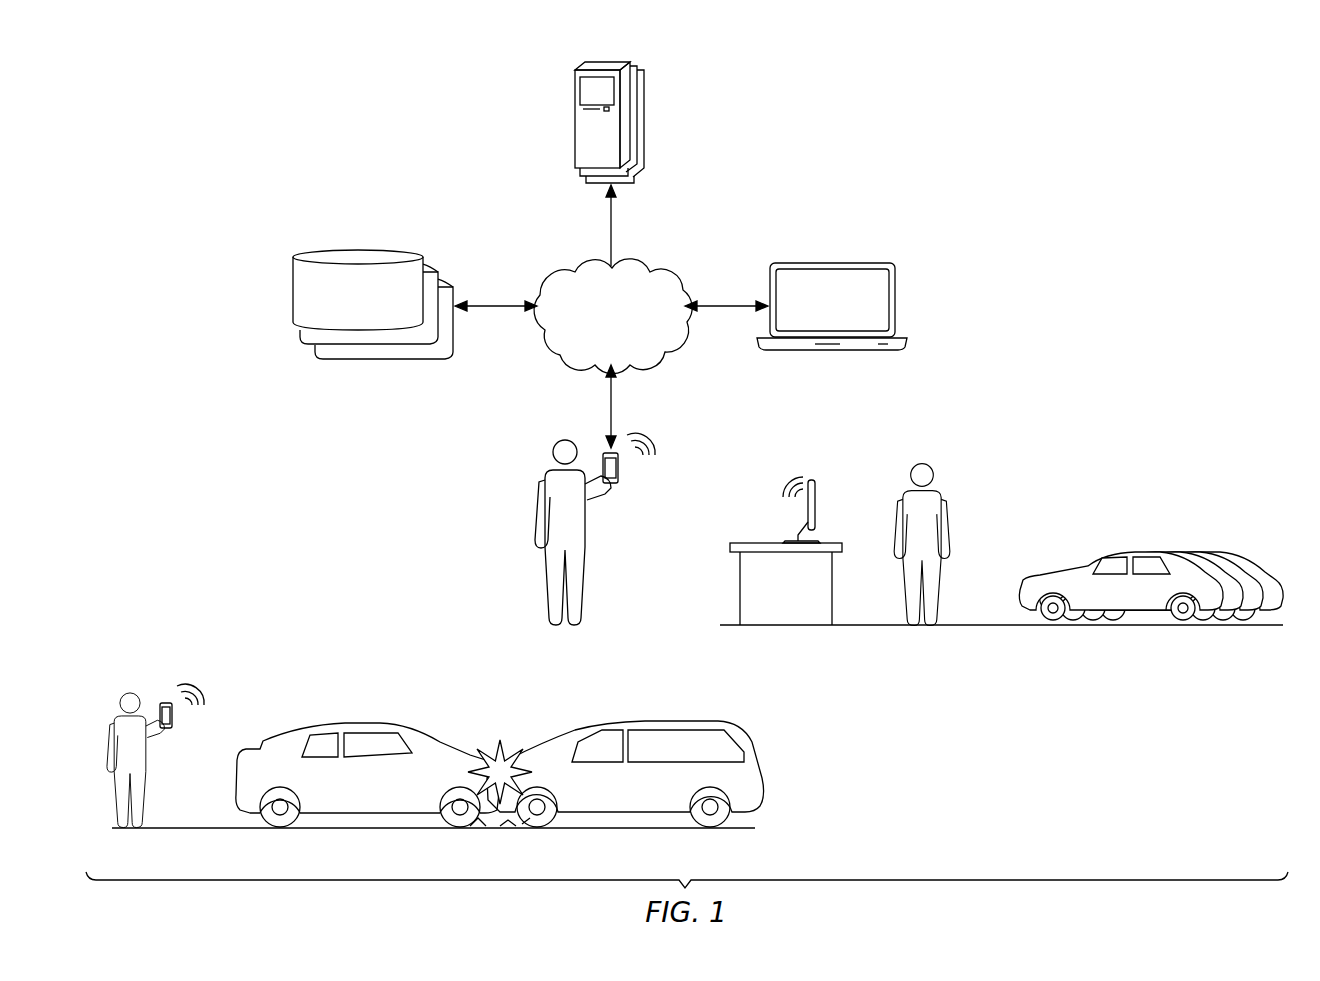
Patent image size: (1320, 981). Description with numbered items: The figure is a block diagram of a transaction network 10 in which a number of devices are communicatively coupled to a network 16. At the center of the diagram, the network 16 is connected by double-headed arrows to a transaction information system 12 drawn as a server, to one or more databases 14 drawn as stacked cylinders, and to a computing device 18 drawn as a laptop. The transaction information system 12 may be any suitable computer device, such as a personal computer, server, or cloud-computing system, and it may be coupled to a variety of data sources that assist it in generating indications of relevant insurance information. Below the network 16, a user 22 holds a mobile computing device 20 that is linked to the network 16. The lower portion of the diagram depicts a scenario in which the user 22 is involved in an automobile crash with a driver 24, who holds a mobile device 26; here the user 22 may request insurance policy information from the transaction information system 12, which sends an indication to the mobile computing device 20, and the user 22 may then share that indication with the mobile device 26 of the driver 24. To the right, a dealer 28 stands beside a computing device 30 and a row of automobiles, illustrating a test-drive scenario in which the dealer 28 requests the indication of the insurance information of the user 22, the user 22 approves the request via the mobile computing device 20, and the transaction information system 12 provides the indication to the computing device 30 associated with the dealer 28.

The transaction network 10 is at (1097, 58).
The transaction information system 12 is at (575, 118).
The databases 14 is at (358, 251).
The network 16 is at (648, 276).
The computing device 18 is at (832, 265).
The mobile computing device 20 is at (620, 474).
The user 22 is at (561, 440).
The driver 24 is at (125, 693).
The mobile device 26 is at (174, 724).
The dealer 28 is at (926, 462).
The computing device 30 is at (814, 484).